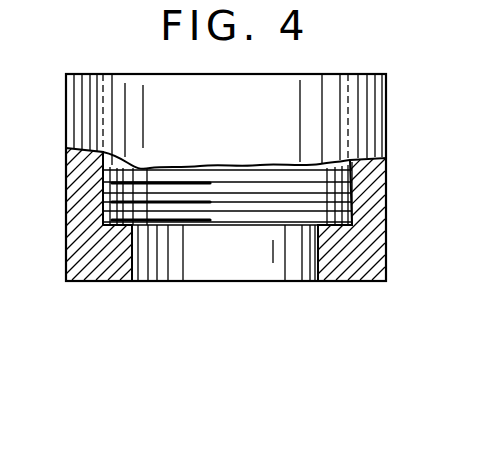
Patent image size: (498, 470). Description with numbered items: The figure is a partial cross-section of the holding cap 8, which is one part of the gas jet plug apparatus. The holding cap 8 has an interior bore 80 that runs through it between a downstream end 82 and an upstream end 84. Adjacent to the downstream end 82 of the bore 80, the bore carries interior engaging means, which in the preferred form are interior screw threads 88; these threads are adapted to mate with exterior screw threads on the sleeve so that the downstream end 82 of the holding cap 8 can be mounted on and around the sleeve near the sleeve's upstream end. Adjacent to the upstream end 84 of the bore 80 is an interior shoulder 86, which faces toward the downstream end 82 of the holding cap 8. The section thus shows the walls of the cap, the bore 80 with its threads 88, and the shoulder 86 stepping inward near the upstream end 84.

The holding cap 8 is at (265, 290).
The interior bore 80 is at (232, 273).
The downstream end 82 is at (328, 77).
The upstream end 84 is at (148, 283).
The interior shoulder 86 is at (118, 228).
The interior screw threads 88 is at (175, 172).